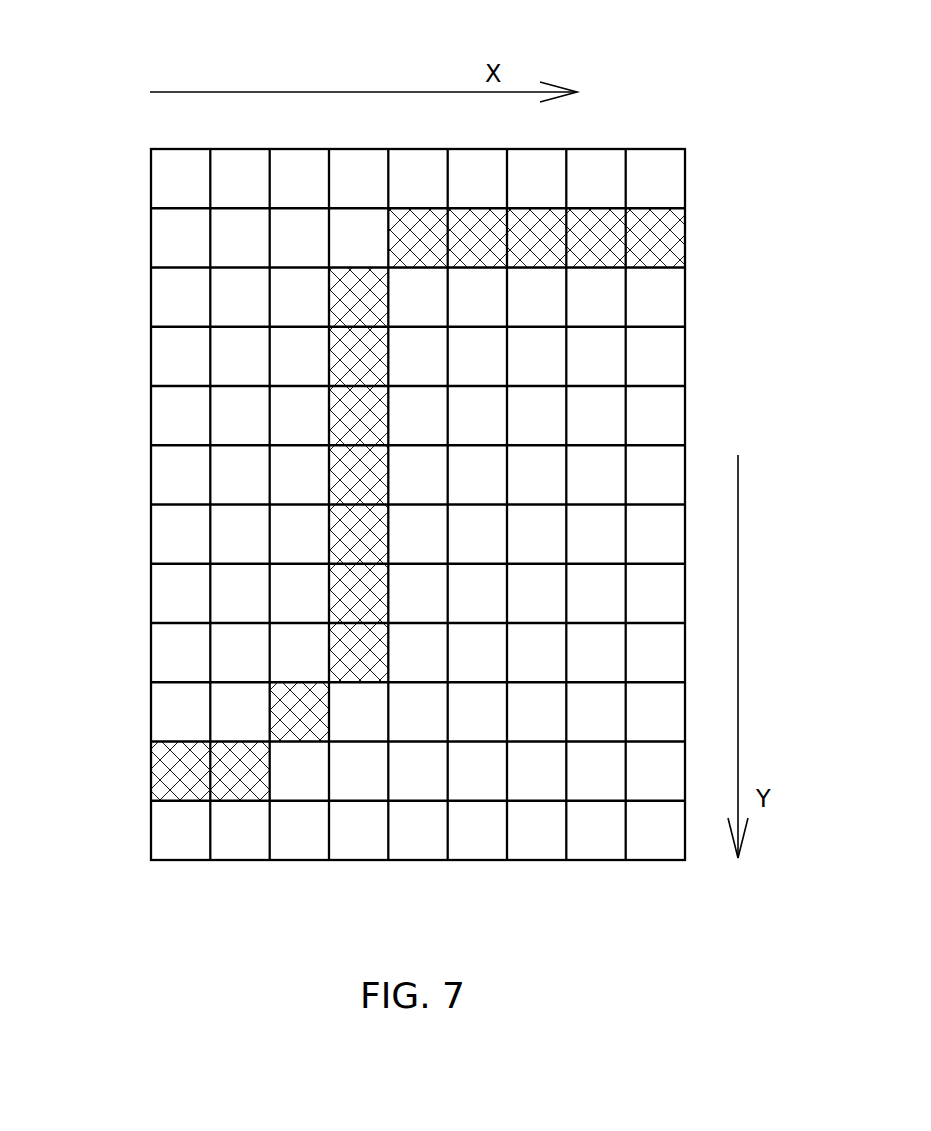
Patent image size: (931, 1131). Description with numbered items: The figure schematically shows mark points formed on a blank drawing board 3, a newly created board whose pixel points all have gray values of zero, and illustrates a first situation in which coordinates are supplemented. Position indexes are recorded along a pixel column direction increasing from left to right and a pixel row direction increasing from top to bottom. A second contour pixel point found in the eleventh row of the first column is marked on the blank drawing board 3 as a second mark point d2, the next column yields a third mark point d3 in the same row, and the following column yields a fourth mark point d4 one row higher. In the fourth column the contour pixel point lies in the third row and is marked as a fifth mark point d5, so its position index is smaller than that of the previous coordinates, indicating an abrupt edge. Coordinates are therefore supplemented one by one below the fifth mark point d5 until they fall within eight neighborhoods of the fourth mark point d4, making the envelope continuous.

The blank drawing board 3 is at (702, 122).
The second mark point d2 is at (172, 735).
The third mark point d3 is at (233, 735).
The fourth mark point d4 is at (297, 675).
The fifth mark point d5 is at (362, 257).